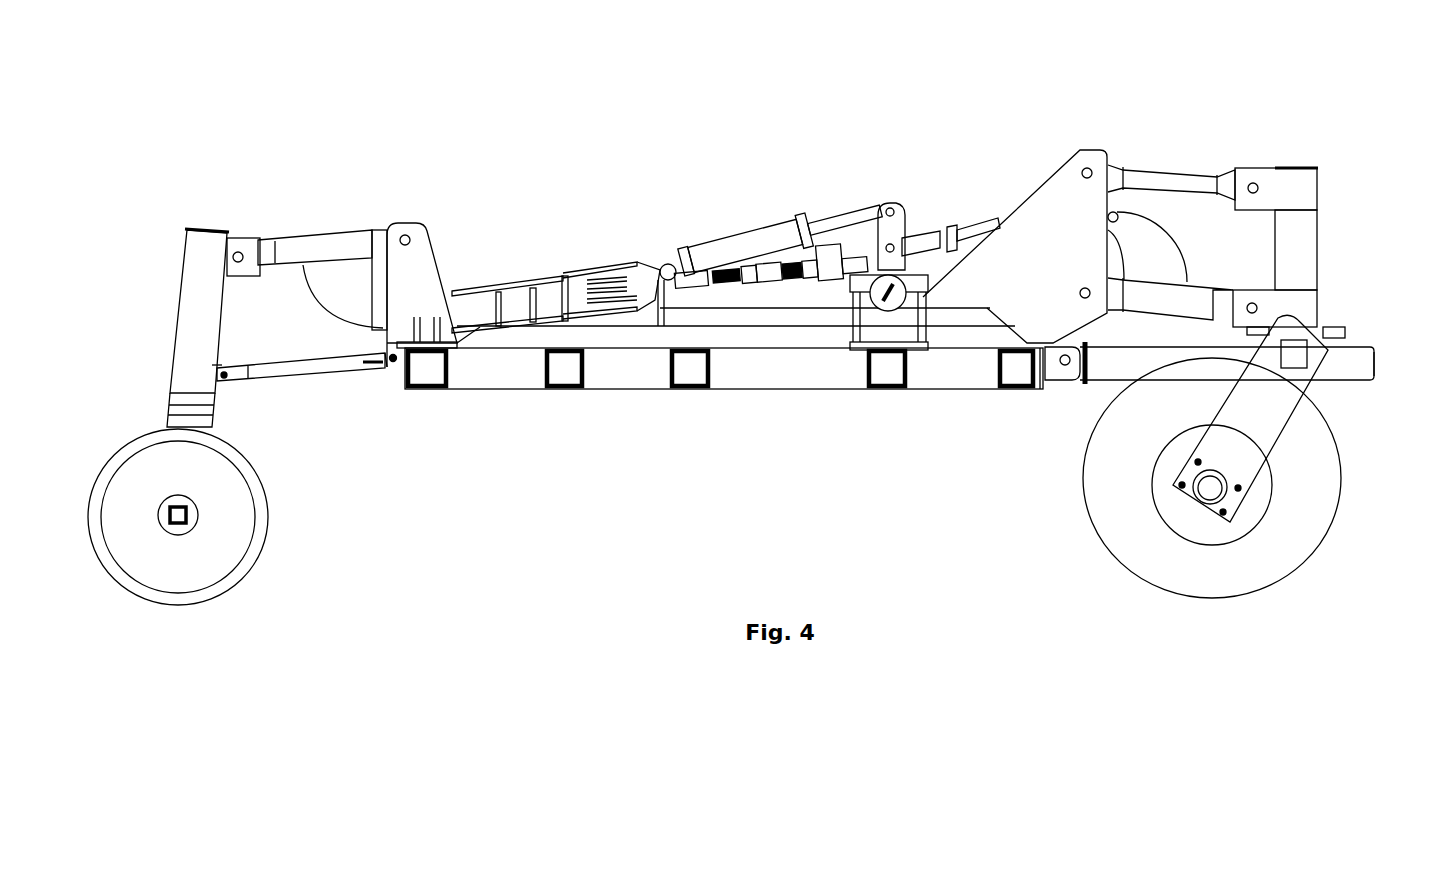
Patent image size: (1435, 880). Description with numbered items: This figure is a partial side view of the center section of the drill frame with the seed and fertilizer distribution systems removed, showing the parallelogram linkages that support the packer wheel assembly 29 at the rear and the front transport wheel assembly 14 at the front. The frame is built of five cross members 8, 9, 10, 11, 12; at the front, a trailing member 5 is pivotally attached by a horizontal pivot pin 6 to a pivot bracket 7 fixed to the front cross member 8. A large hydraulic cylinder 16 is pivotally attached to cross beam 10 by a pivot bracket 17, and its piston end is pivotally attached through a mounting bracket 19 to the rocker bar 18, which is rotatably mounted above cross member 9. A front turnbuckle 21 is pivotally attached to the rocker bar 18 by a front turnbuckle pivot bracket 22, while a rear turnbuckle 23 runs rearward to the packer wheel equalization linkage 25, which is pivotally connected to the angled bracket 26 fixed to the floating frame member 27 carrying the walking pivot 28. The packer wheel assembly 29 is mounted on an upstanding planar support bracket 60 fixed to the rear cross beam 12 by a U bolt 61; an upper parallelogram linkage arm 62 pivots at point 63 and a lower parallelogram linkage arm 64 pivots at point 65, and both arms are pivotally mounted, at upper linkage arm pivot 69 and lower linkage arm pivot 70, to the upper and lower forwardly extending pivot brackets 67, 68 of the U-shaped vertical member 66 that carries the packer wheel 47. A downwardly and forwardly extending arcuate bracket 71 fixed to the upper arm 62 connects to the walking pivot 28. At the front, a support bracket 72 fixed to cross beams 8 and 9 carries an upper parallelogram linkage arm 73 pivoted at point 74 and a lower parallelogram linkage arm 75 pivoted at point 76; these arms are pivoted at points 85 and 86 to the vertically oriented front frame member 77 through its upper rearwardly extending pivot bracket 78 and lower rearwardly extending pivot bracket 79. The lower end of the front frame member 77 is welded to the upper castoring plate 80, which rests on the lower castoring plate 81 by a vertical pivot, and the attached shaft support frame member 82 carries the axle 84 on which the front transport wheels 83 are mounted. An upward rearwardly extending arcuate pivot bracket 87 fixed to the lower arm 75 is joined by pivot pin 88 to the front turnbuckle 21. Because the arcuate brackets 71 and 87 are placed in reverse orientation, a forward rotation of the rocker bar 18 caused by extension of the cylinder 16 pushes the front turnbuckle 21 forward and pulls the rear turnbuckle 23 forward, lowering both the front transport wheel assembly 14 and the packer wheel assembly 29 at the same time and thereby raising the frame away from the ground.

The trailing member 5 is at (1100, 360).
The horizontal pivot pin 6 is at (1064, 372).
The pivot bracket 7 is at (1058, 370).
The front center main frame cross member 8 is at (1020, 372).
The cross member 9 is at (888, 378).
The cross beam 10 is at (696, 376).
The cross member 11 is at (568, 378).
The rear cross beam 12 is at (436, 370).
The front transport wheel assembly 14 is at (1212, 140).
The hydraulic cylinder 16 is at (762, 242).
The pivot bracket 17 is at (670, 263).
The rocker bar 18 is at (883, 305).
The rocker bar center section hydraulic cylinder mounting bracket 19 is at (898, 222).
The front adjustable elongate turnbuckle 21 is at (968, 225).
The rocker bar front turnbuckle pivot bracket 22 is at (920, 236).
The rear turnbuckle 23 is at (770, 290).
The packer wheel equalization linkage 25 is at (652, 270).
The equalization linkage/angled bracket 26 is at (582, 262).
The packer wheel floating frame member 27 is at (520, 305).
The walking pivot 28 is at (476, 300).
The packer wheel assembly 29 is at (84, 552).
The packer wheel 47 is at (254, 552).
The packer wheel support bracket 60 is at (425, 276).
The U bolt 61 is at (394, 372).
The upper parallelogram linkage arm 62 is at (338, 242).
The pivot point 63 is at (408, 236).
The lower parallelogram linkage arm 64 is at (318, 370).
The pivot point 65 is at (393, 370).
The U-shaped vertically oriented member 66 is at (202, 330).
The upper forwardly extending pivot bracket 67 is at (245, 278).
The lower forwardly extending pivot bracket 68 is at (222, 384).
The upper linkage arm pivot 69 is at (242, 254).
The lower linkage arm pivot 70 is at (222, 370).
The arcuate bracket 71 is at (348, 308).
The front transport wheel assembly support bracket 72 is at (1052, 192).
The upper parallelogram linkage arm 73 is at (1182, 180).
The pivot point 74 is at (1088, 166).
The lower parallelogram linkage arm 75 is at (1182, 285).
The pivot point 76 is at (1080, 292).
The vertically oriented front frame member 77 is at (1318, 238).
The upper rearwardly extending pivot bracket 78 is at (1306, 196).
The lower rearwardly extending pivot bracket 79 is at (1306, 300).
The upper castoring plate 80 is at (1338, 328).
The lower castoring plate 81 is at (1366, 357).
The front transport shaft support frame member 82 is at (1300, 385).
The front transport wheel 83 is at (1325, 515).
The axle 84 is at (1208, 498).
The pivot point 85 is at (1255, 183).
The pivot point 86 is at (1252, 302).
The arcuate pivot bracket 87 is at (1152, 246).
The pivot pin 88 is at (1120, 214).